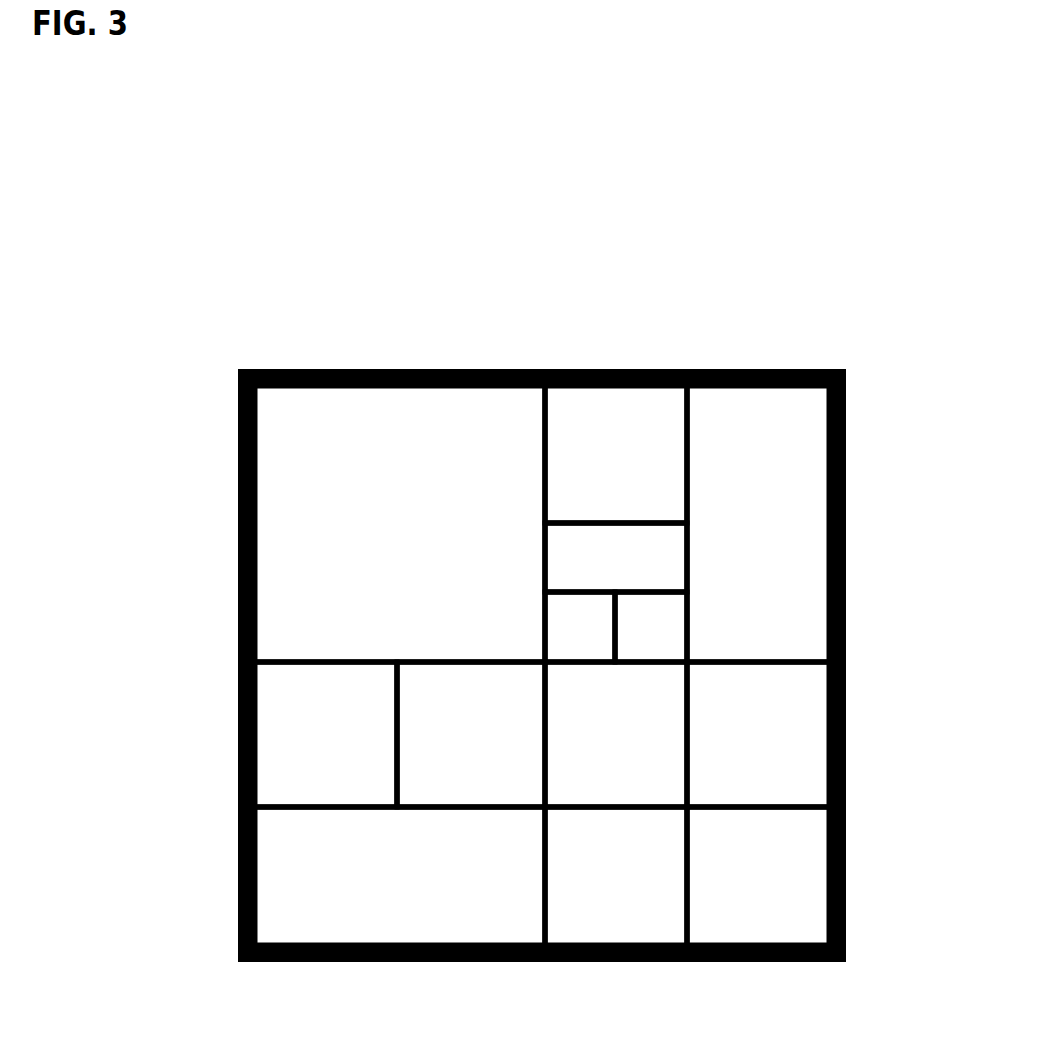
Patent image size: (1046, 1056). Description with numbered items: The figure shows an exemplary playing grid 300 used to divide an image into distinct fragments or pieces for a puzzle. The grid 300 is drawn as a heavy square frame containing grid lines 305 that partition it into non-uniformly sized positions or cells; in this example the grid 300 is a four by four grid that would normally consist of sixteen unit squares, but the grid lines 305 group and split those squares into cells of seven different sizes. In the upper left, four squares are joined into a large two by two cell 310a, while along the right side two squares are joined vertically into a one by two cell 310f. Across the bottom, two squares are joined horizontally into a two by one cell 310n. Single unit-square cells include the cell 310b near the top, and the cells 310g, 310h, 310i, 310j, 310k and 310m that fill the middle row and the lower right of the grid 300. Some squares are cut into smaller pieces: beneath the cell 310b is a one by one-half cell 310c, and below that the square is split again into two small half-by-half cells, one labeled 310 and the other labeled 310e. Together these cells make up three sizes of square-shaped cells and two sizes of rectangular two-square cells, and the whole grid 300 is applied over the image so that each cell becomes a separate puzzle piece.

The grid 300 is at (389, 364).
The grid lines 305 is at (556, 586).
The 2×2 cell 310a is at (415, 530).
The 1×1 cell 310b is at (636, 478).
The 1×0.5 cell 310c is at (636, 572).
The cell 310 is at (596, 641).
The cell 310e is at (668, 643).
The 1×2 cell 310f is at (779, 535).
The 1×1 cell 310g is at (348, 752).
The 1×1 cell 310h is at (496, 748).
The 1×1 cell 310i is at (637, 754).
The 1×1 cell 310j is at (768, 754).
The 1×1 cell 310k is at (638, 897).
The 1×1 cell 310m is at (786, 894).
The 2×1 cell 310n is at (410, 893).